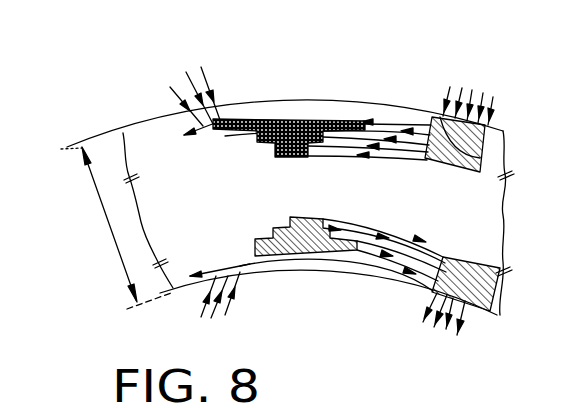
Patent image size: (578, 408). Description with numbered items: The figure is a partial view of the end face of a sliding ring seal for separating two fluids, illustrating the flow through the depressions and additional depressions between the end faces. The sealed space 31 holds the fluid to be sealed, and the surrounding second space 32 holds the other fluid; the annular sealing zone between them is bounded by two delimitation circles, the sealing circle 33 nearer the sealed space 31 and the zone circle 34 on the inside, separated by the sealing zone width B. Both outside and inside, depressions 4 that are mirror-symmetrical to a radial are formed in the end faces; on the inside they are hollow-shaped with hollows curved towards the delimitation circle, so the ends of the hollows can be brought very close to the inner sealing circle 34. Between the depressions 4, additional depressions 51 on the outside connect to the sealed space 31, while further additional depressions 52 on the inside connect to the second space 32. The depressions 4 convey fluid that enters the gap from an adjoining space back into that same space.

The depressions 4 is at (285, 119).
The sealed space 31 is at (258, 77).
The second space 32 is at (284, 346).
The sealing circle 33 is at (380, 104).
The zone circle 34 is at (380, 264).
The additional depressions 51 is at (483, 149).
The further additional depressions 52 is at (490, 314).
The sealing zone width B is at (116, 228).